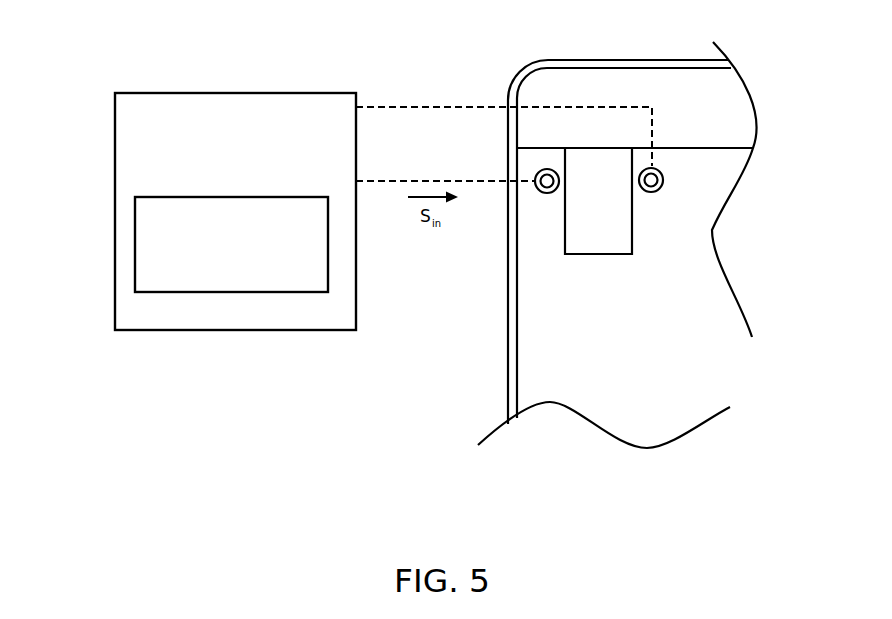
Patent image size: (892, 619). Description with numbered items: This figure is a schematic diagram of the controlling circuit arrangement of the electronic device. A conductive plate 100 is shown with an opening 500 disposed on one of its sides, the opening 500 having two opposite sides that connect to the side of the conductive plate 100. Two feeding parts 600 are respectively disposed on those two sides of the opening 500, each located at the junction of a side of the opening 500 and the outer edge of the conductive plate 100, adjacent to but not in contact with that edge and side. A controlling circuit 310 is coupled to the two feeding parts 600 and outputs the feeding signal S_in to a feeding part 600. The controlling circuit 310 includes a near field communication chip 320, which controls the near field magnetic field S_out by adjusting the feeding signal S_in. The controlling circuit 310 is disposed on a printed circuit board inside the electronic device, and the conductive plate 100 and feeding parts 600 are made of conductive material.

The conductive plate 100 is at (544, 350).
The controlling circuit 310 is at (216, 175).
The near field communication chip 320 is at (216, 271).
The opening 500 is at (593, 241).
The feeding parts 600 is at (549, 193).